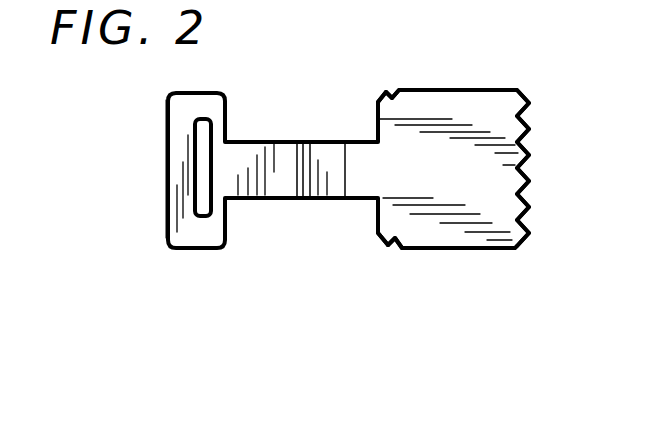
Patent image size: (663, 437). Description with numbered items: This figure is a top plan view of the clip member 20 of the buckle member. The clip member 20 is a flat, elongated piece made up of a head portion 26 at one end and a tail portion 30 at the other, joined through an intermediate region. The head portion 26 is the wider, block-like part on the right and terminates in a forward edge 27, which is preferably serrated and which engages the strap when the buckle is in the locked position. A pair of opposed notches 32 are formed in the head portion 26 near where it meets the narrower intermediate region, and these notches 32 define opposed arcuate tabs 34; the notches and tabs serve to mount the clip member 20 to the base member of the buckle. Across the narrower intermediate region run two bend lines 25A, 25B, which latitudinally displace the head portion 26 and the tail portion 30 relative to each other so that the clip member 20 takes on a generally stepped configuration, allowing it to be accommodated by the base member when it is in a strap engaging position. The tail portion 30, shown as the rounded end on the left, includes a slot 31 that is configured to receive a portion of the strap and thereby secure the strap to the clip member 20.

The clip member 20 is at (495, 83).
The bend line 25A is at (298, 186).
The bend line 25B is at (345, 180).
The head portion 26 is at (462, 187).
The forward edge 27 is at (527, 128).
The tail portion 30 is at (190, 105).
The slot 31 is at (198, 158).
The notches 32 is at (392, 95).
The arcuate tabs 34 is at (383, 98).